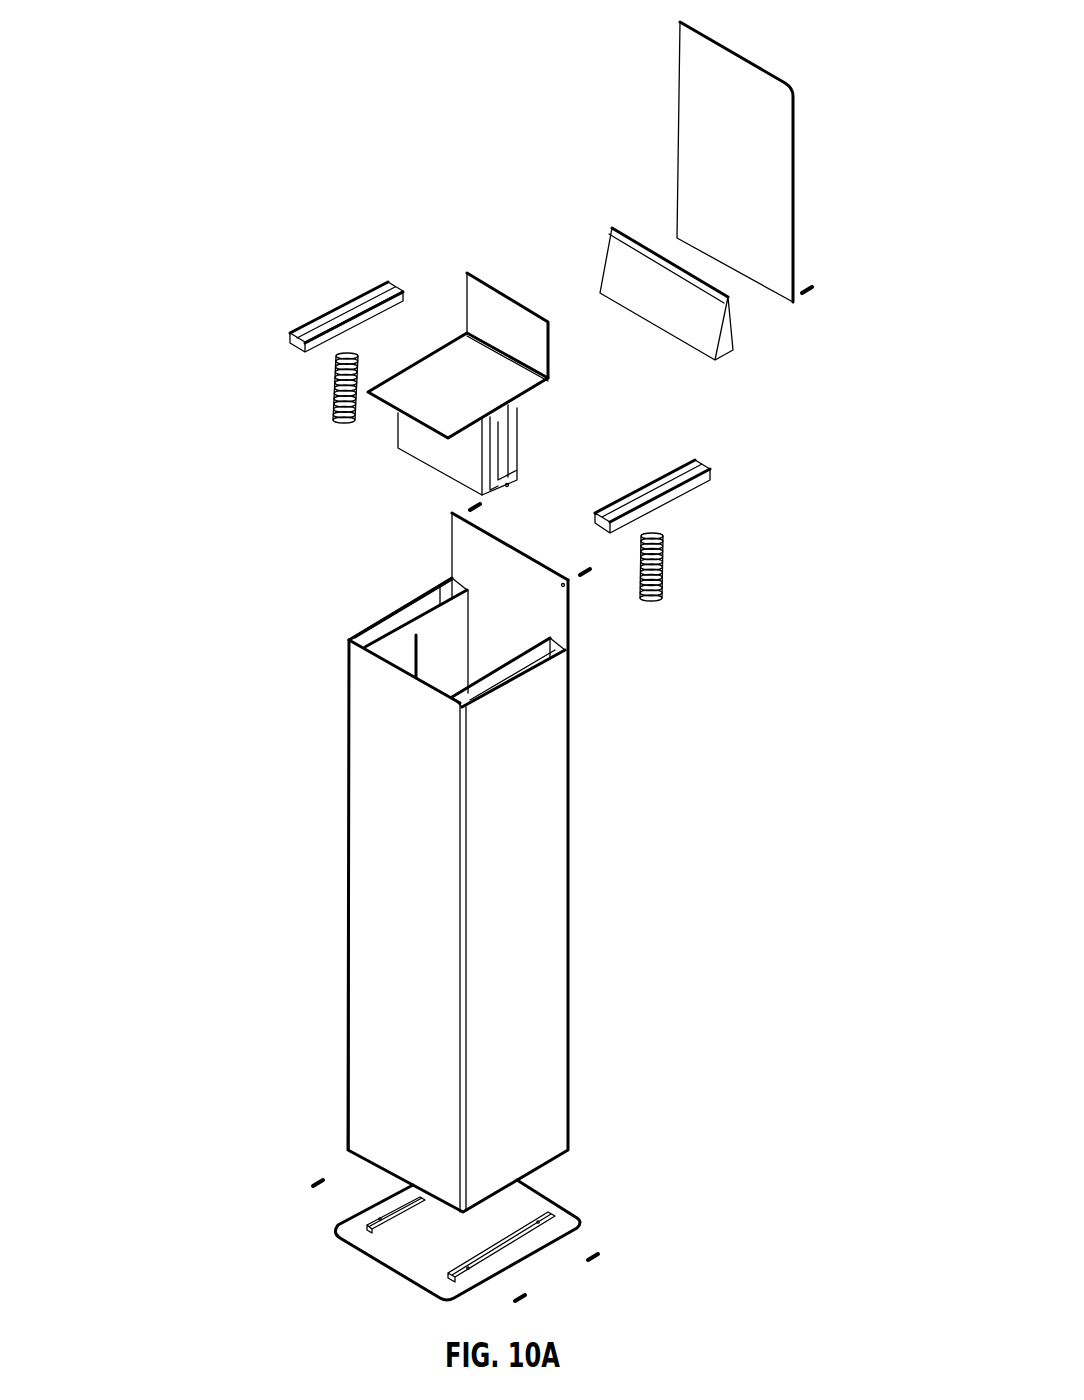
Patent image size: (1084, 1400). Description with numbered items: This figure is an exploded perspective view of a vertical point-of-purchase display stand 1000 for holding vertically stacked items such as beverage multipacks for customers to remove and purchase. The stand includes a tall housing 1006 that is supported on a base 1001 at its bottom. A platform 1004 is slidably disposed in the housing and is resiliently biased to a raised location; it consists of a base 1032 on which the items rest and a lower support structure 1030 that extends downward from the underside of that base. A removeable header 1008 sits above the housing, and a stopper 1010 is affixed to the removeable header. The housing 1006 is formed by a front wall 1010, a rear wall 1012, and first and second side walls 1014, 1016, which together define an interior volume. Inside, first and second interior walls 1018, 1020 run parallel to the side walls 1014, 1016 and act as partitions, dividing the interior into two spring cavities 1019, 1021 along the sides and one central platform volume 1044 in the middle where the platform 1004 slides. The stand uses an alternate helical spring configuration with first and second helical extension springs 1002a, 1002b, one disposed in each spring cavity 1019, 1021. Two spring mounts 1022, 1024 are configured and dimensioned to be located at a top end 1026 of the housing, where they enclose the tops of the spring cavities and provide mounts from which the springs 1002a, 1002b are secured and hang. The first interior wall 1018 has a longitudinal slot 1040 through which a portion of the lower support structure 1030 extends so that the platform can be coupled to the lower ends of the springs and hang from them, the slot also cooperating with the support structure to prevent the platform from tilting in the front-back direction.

The display stand 1000 is at (287, 83).
The base 1001 is at (380, 1267).
The first helical extension spring 1002a is at (328, 400).
The second helical extension spring 1002b is at (670, 560).
The platform 1004 is at (419, 367).
The housing 1006 is at (439, 862).
The removeable header 1008 is at (750, 62).
The stopper / front wall 1010 is at (678, 325).
The rear wall 1012 is at (577, 867).
The first side wall 1014 is at (343, 657).
The second side wall 1016 is at (552, 988).
The first interior wall 1018 is at (440, 598).
The spring cavity 1019 is at (363, 630).
The second interior wall 1020 is at (527, 652).
The spring cavity 1021 is at (488, 683).
The spring mount 1022 is at (320, 320).
The spring mount 1024 is at (675, 482).
The top end 1026 is at (422, 592).
The lower support structure 1030 is at (390, 430).
The base 1032 is at (483, 402).
The longitudinal slot 1040 is at (422, 648).
The central platform volume 1044 is at (480, 660).